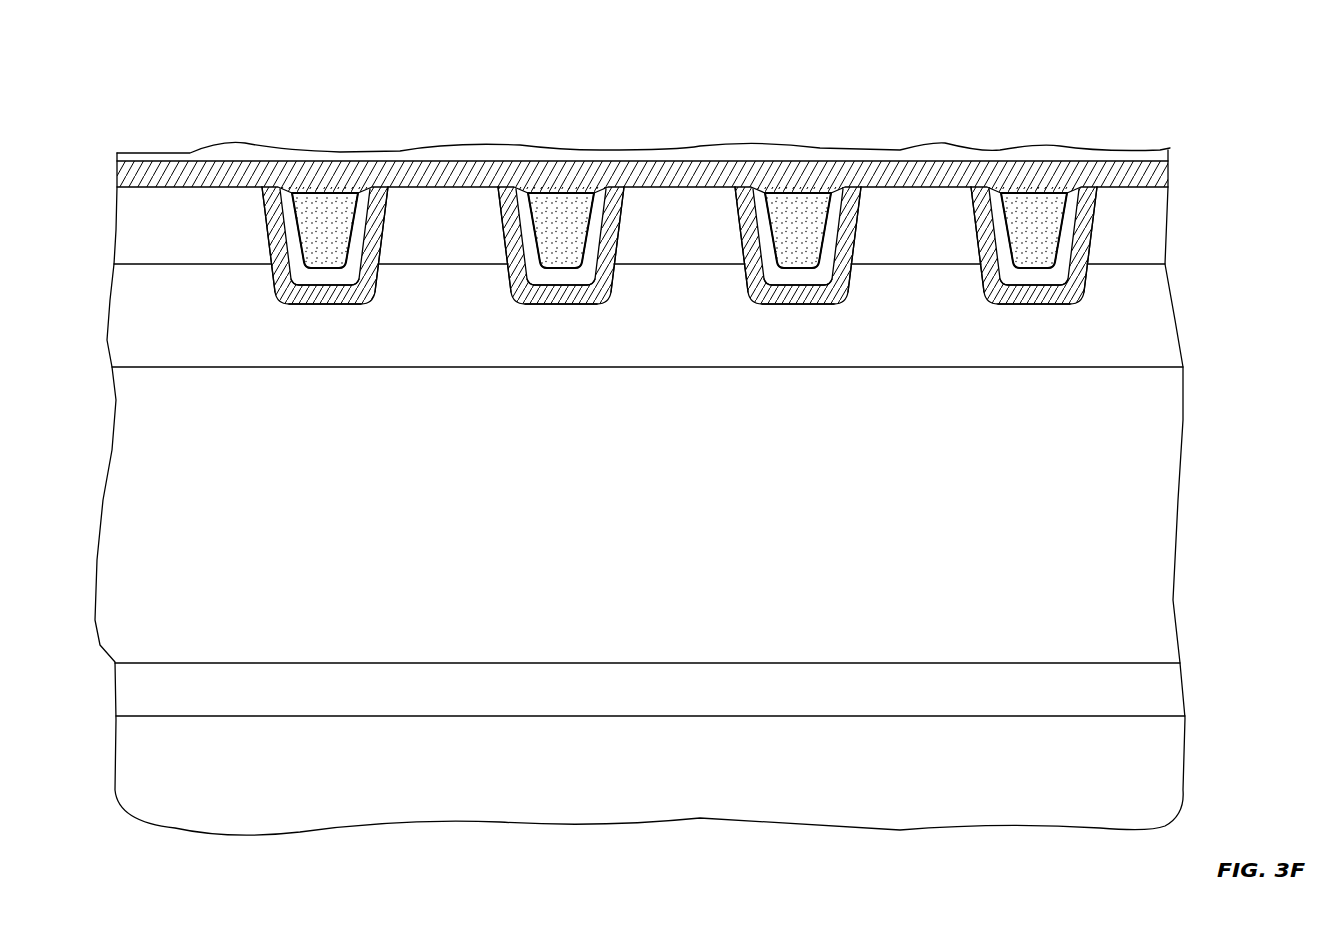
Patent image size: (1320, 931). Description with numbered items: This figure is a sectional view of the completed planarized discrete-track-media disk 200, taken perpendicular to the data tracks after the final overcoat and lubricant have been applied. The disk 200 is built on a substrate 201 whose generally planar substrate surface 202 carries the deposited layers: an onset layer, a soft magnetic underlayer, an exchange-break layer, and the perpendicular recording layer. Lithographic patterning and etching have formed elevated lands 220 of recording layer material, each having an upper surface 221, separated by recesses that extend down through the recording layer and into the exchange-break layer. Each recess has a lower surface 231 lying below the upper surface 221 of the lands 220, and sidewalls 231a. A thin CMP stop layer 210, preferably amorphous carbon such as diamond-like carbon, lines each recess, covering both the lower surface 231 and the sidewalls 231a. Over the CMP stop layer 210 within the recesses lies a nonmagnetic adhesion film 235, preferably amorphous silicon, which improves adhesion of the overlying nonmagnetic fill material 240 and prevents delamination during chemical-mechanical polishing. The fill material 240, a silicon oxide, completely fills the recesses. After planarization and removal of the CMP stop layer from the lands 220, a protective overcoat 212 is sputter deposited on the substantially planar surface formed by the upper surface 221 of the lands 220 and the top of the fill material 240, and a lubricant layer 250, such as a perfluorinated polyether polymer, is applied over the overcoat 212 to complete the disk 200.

The disk 200 is at (189, 66).
The substrate 201 is at (1170, 772).
The substrate surface 202 is at (1168, 716).
The CMP stop layer 210 is at (367, 273).
The protective overcoat 212 is at (150, 176).
The elevated lands 220 is at (218, 247).
The upper surface of the lands 221 is at (138, 188).
The lower surface of the recesses 231 is at (330, 303).
The sidewalls of the recesses 231a is at (268, 225).
The adhesion film 235 is at (305, 273).
The nonmagnetic fill material 240 is at (325, 207).
The lubricant layer 250 is at (1143, 158).